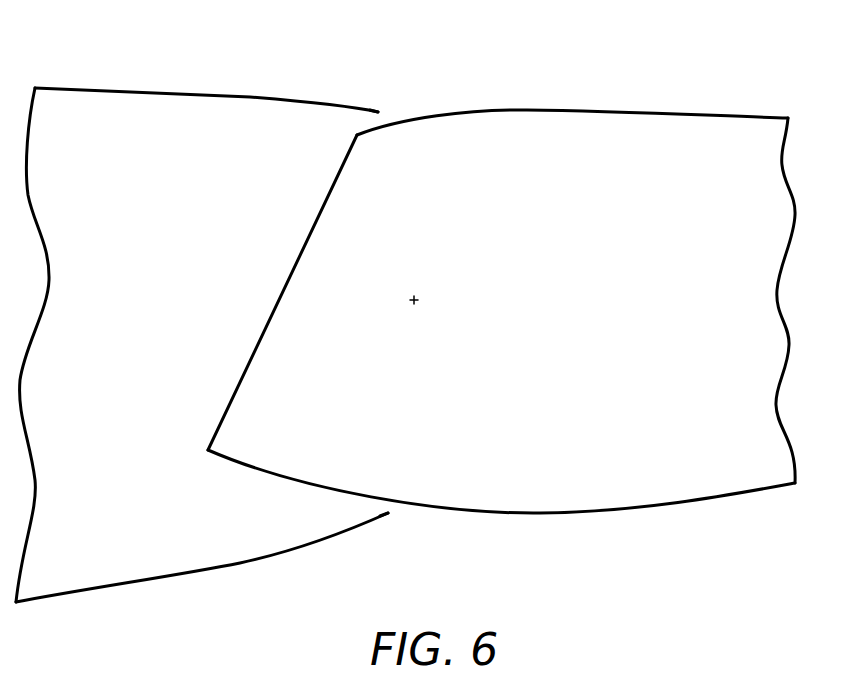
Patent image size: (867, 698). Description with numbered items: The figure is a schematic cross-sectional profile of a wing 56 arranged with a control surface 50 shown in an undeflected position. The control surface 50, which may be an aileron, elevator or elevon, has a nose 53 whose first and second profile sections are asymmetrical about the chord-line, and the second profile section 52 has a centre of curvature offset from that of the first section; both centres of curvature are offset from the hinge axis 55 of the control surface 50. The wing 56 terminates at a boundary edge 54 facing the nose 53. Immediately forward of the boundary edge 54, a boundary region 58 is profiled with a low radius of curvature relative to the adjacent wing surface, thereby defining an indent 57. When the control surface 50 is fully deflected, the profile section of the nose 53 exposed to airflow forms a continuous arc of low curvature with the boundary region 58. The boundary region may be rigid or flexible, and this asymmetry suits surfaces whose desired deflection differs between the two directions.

The control surface 50 is at (782, 212).
The second profile section 52 is at (262, 468).
The nose 53 is at (617, 60).
The boundary edge 54 is at (378, 112).
The hinge axis 55 is at (416, 306).
The wing 56 is at (208, 96).
The indent 57 is at (401, 108).
The boundary region 58 is at (345, 110).